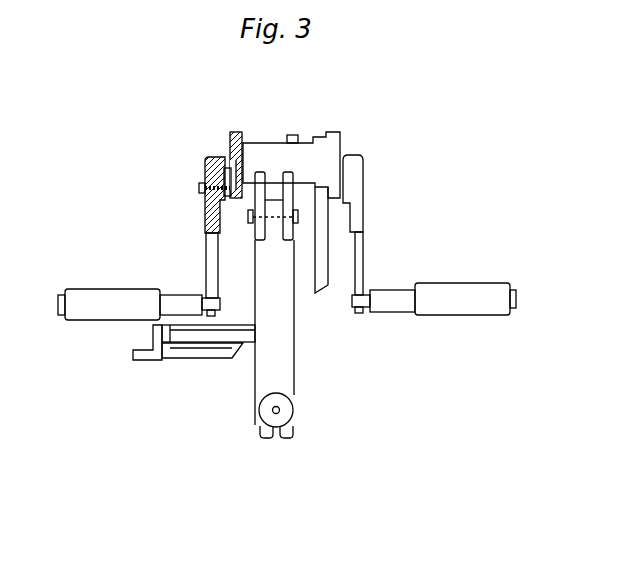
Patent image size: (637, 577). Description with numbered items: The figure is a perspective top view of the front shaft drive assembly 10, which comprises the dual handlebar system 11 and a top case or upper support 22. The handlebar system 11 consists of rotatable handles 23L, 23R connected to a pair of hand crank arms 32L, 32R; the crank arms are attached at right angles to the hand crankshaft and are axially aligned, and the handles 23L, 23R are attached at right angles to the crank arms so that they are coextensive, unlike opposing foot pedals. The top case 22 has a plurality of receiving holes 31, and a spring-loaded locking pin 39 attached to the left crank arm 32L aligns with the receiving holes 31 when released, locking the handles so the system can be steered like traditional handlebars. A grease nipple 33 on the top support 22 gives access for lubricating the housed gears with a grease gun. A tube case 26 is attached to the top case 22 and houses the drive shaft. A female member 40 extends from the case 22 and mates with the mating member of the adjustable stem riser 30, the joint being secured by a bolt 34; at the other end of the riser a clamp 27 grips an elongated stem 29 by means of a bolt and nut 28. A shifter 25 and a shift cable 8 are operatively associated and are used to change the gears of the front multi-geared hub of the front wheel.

The front shaft drive assembly 10 is at (258, 125).
The dual handlebar system 11 is at (377, 238).
The top case 22 is at (342, 143).
The grease nipple 33 is at (292, 134).
The receiving holes 31 is at (228, 146).
The left hand crank arm 32L is at (205, 172).
The right hand crank arm 32R is at (366, 172).
The locking pin 39 is at (199, 190).
The female member 40 is at (251, 193).
The tube case 26 is at (325, 296).
The adjustable stem riser 30 is at (295, 340).
The elongated stem 29 is at (259, 412).
The bolt 34 is at (279, 407).
The clamp 27 is at (263, 438).
The bolt and nut 28 is at (290, 437).
The shift cable 8 is at (188, 362).
The shifter 25 is at (142, 363).
The left rotatable handle 23L is at (128, 316).
The right rotatable handle 23R is at (482, 313).